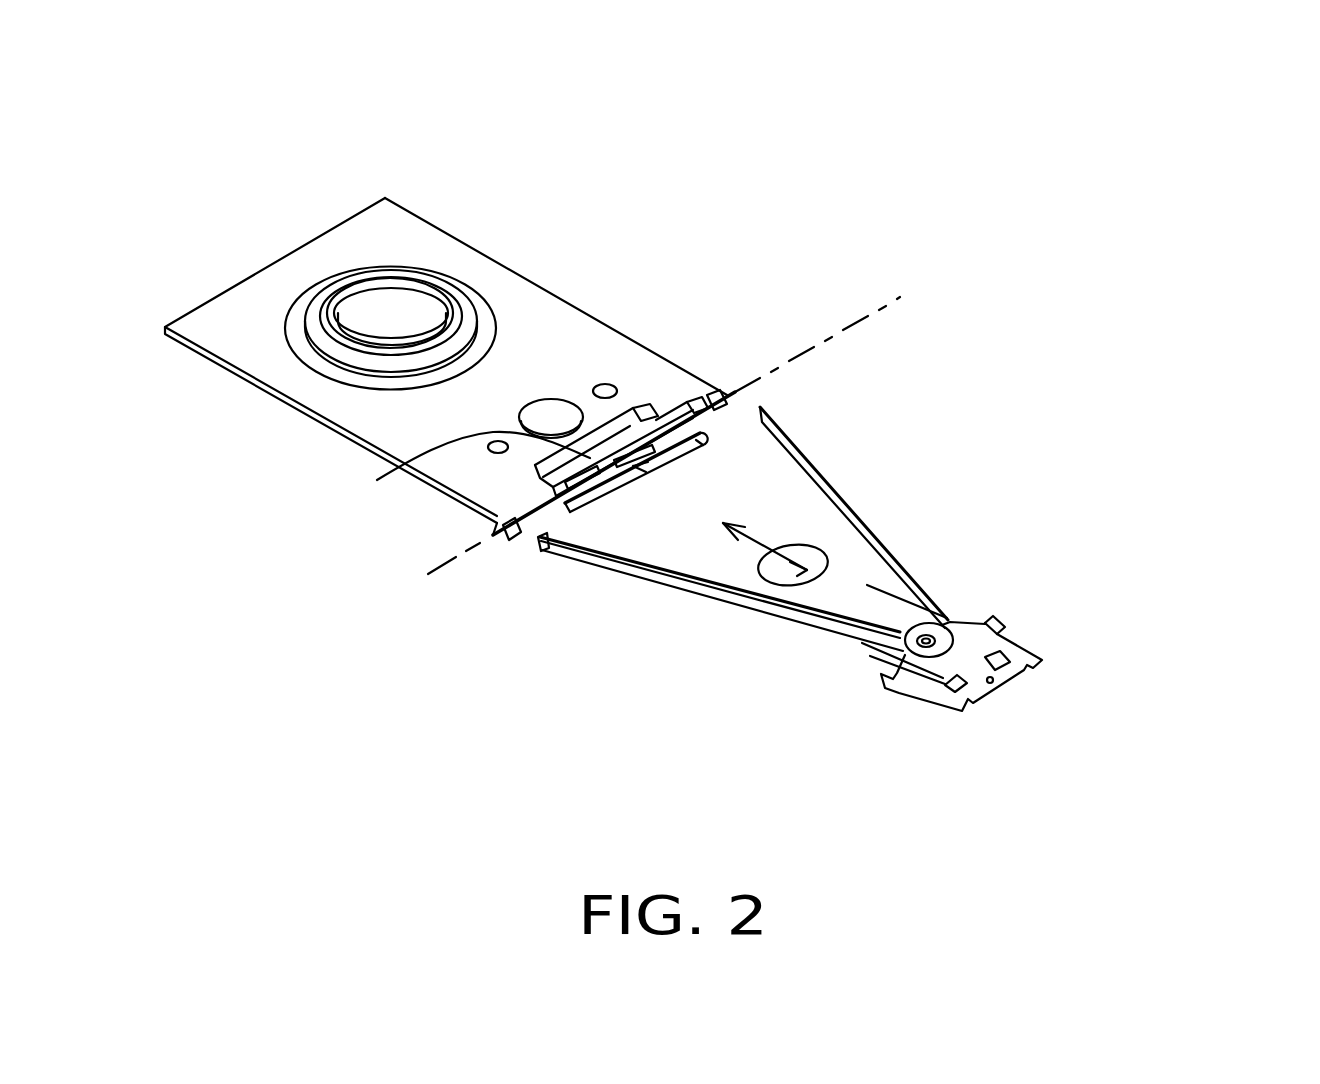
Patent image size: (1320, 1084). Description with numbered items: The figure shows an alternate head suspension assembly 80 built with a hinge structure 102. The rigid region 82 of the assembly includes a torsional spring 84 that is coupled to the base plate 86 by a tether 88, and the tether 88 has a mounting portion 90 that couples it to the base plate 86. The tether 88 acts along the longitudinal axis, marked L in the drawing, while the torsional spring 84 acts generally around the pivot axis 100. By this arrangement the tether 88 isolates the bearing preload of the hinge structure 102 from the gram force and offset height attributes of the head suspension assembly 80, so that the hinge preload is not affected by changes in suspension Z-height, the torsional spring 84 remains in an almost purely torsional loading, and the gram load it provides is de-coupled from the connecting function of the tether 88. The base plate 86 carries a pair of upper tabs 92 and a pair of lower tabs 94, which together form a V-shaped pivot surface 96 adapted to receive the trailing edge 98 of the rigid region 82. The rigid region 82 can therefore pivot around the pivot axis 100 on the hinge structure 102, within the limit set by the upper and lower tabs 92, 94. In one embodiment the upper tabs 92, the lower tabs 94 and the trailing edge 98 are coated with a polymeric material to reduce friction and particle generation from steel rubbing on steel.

The head suspension assembly 80 is at (1018, 538).
The rigid region 82 is at (1045, 655).
The torsional spring 84 is at (655, 435).
The base plate 86 is at (462, 262).
The tether 88 is at (377, 480).
The mounting portion 90 is at (548, 405).
The upper tabs 92 is at (706, 410).
The lower tabs 94 is at (723, 397).
The V-shaped pivot surface 96 is at (540, 500).
The trailing edge 98 is at (503, 533).
The pivot axis 100 is at (863, 318).
The hinge structure 102 is at (703, 445).